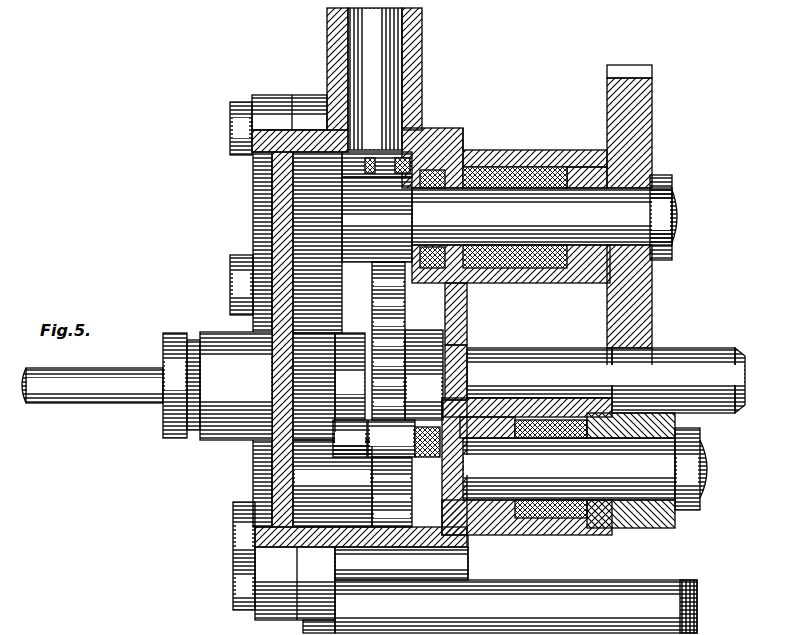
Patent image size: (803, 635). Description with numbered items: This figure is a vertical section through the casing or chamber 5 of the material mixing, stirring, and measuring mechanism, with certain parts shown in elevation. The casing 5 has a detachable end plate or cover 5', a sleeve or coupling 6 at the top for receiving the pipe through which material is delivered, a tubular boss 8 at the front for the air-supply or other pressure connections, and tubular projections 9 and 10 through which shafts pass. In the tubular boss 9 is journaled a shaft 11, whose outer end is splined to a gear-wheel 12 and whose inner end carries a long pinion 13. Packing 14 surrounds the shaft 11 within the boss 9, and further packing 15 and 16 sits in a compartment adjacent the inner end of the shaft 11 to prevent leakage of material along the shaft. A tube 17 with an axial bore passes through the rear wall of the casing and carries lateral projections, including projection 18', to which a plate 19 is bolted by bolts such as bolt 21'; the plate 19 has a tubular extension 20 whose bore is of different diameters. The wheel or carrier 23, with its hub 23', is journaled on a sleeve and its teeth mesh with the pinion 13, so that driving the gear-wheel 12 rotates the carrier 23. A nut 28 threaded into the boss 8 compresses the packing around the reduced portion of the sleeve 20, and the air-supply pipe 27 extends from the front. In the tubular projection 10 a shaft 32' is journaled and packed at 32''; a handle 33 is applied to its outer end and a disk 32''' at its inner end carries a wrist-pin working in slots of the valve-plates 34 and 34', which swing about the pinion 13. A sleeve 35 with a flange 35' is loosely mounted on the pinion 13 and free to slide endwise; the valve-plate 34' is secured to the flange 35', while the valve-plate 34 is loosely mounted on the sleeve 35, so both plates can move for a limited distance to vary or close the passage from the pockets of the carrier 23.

The sleeve or coupling 6 is at (328, 32).
The sleeve 35 is at (377, 147).
The flange 35' is at (438, 175).
The packing 15 is at (440, 172).
The packing 16 is at (464, 128).
The packing 14 is at (487, 173).
The tubular projection 9 is at (522, 154).
The gear-wheel 12 is at (652, 123).
The long pinion 13 is at (414, 221).
The shaft 11 is at (487, 222).
The valve-plate 34 is at (288, 242).
The valve-plate 34' is at (477, 314).
The wheel or carrier 23 is at (439, 341).
The hub 23' is at (447, 427).
The tube 17 is at (548, 363).
The tubular boss 8 is at (236, 386).
The tubular extension 20 is at (290, 368).
The plate 19 is at (349, 376).
The lateral projection 18' is at (424, 375).
The air-supply pipe 27 is at (70, 400).
The nut 28 is at (170, 435).
The end plate or cover 5' is at (274, 328).
The bolt 21' is at (335, 446).
The disk 32''' is at (446, 452).
The shaft 32' is at (585, 469).
The tubular projection 10 is at (510, 540).
The packing 32'' is at (557, 490).
The handle 33 is at (662, 518).
The casing or chamber 5 is at (361, 568).